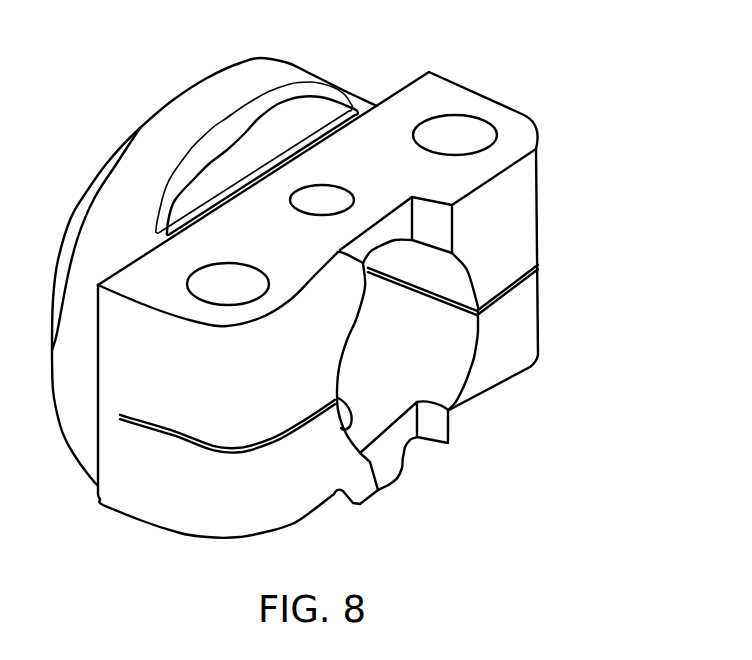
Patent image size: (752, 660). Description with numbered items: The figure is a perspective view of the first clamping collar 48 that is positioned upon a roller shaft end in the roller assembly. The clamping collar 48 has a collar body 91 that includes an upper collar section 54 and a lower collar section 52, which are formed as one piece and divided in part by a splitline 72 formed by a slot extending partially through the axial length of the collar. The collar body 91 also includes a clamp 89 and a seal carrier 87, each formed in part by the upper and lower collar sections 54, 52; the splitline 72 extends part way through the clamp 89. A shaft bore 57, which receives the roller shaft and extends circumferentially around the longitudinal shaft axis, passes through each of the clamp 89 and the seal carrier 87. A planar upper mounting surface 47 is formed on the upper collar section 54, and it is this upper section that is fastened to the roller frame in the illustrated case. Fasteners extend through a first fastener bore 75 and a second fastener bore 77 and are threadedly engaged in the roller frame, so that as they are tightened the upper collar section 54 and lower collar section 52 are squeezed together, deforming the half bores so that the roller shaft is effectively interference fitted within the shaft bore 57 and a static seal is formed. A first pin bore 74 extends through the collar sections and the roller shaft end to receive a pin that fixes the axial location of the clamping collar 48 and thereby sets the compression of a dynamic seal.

The first clamping collar 48 is at (343, 301).
The planar upper mounting surface 47 is at (145, 270).
The seal carrier 87 is at (301, 74).
The clamp 89 is at (190, 534).
The upper collar section 54 is at (515, 180).
The lower collar section 52 is at (517, 335).
The splitline 72 is at (538, 267).
The collar body 91 is at (539, 212).
The shaft bore 57 is at (465, 362).
The first pin bore 74 is at (300, 188).
The first fastener bore 75 is at (200, 268).
The second fastener bore 77 is at (428, 118).